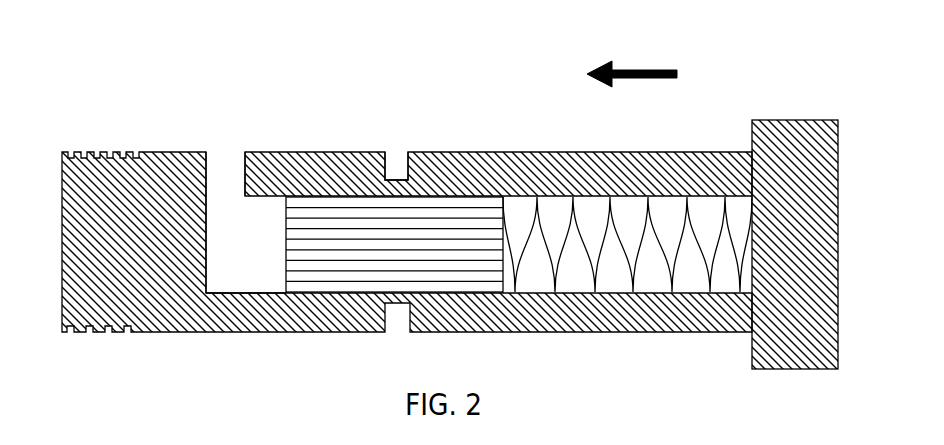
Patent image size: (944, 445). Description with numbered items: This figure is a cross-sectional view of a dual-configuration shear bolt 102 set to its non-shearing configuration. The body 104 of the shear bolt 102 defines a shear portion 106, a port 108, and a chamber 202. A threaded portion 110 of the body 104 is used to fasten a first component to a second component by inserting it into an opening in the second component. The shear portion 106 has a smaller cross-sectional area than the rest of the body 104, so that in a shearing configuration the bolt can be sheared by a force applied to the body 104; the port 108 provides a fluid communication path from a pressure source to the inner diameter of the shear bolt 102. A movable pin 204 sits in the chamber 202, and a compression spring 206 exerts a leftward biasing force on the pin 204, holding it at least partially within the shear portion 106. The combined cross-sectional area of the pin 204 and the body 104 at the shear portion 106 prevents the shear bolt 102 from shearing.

The dual-configuration shear bolt 102 is at (752, 84).
The body 104 is at (534, 148).
The shear portion 106 is at (403, 166).
The port 108 is at (212, 150).
The threaded portion 110 is at (115, 138).
The chamber 202 is at (233, 283).
The movable pin 204 is at (278, 231).
The spring 206 is at (607, 290).